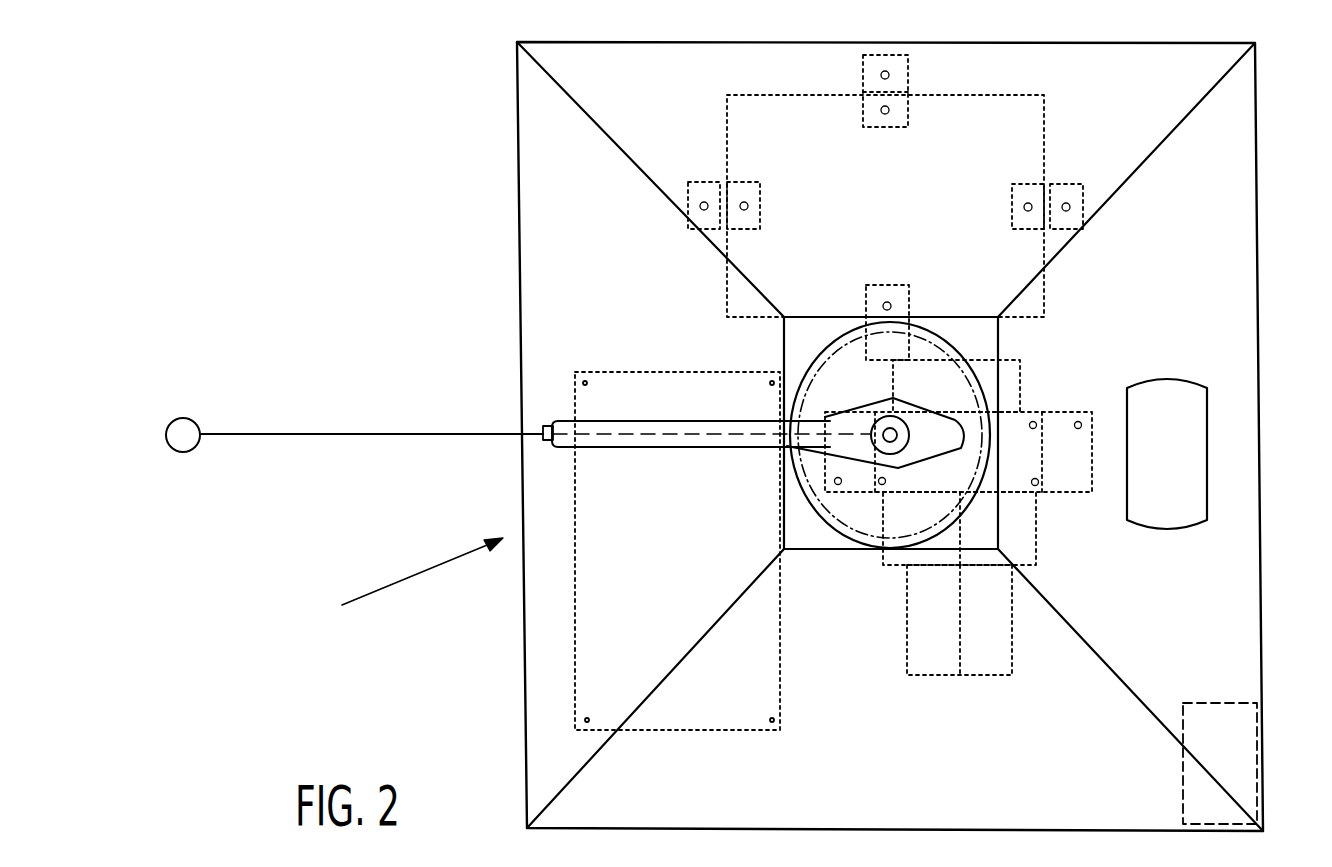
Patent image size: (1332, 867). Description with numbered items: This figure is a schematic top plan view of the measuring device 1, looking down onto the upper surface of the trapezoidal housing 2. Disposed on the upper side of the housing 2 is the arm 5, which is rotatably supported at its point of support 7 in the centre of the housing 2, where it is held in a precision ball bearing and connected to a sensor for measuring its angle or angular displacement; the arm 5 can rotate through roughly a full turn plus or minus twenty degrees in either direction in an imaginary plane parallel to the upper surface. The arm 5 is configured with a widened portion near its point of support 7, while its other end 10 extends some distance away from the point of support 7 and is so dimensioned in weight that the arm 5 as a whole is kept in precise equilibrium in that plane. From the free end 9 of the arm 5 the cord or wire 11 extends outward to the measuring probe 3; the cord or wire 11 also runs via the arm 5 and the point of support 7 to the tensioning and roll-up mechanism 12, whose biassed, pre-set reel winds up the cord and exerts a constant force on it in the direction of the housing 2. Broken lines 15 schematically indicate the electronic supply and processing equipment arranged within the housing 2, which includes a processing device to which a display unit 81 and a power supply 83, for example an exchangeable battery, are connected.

The measuring device 1 is at (341, 618).
The housing 2 is at (548, 102).
The measuring probe 3 is at (178, 425).
The arm 5 is at (693, 428).
The point of support 7 is at (888, 432).
The free end 9 is at (557, 428).
The other end 10 is at (948, 437).
The cord or wire 11 is at (330, 433).
The tensioning and roll-up mechanism 12 is at (947, 535).
The electronic supply and processing equipment 15 is at (1033, 303).
The display unit 81 is at (1188, 472).
The power supply 83 is at (1233, 762).